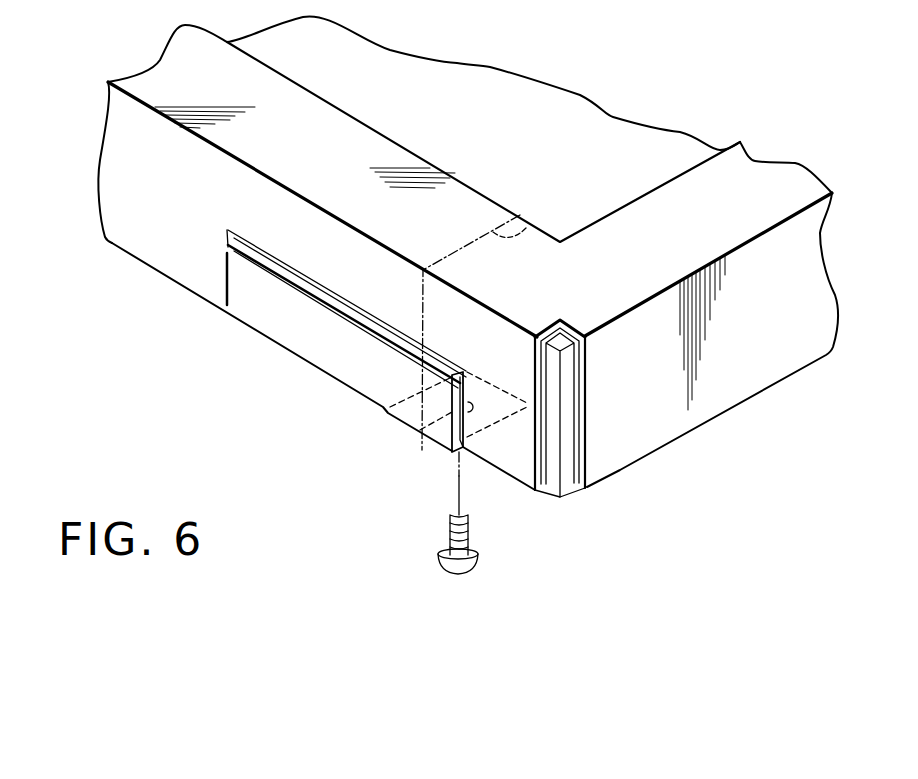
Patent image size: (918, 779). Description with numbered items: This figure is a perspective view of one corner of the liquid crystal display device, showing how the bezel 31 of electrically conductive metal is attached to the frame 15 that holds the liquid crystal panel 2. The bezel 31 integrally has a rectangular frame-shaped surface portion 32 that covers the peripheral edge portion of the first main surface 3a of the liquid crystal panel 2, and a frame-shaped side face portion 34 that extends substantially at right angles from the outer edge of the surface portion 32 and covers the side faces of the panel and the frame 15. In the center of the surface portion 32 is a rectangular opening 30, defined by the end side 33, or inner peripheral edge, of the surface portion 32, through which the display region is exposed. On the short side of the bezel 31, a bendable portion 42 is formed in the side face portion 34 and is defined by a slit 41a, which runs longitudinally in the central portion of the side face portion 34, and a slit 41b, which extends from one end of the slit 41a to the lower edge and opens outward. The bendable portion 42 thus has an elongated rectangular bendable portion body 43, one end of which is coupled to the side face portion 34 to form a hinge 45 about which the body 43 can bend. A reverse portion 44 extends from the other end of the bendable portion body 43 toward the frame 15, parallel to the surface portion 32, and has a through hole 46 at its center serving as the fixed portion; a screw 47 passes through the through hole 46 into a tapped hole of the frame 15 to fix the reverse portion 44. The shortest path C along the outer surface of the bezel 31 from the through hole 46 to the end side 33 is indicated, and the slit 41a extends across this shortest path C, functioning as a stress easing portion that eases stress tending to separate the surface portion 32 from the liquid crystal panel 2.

The liquid crystal panel 2 is at (518, 85).
The first main surface 3a is at (452, 73).
The frame 15 is at (560, 497).
The opening 30 is at (657, 130).
The bezel 31 is at (467, 173).
The surface portion 32 is at (290, 97).
The end side 33 is at (402, 143).
The side face portion 34 is at (123, 235).
The slit 41a is at (260, 240).
The slit 41b is at (465, 390).
The bendable portion 42 is at (258, 302).
The bendable portion body 43 is at (295, 337).
The reverse portion 44 is at (485, 420).
The hinge 45 is at (225, 282).
The through hole 46 is at (470, 402).
The screw 47 is at (478, 568).
The shortest path C is at (497, 233).